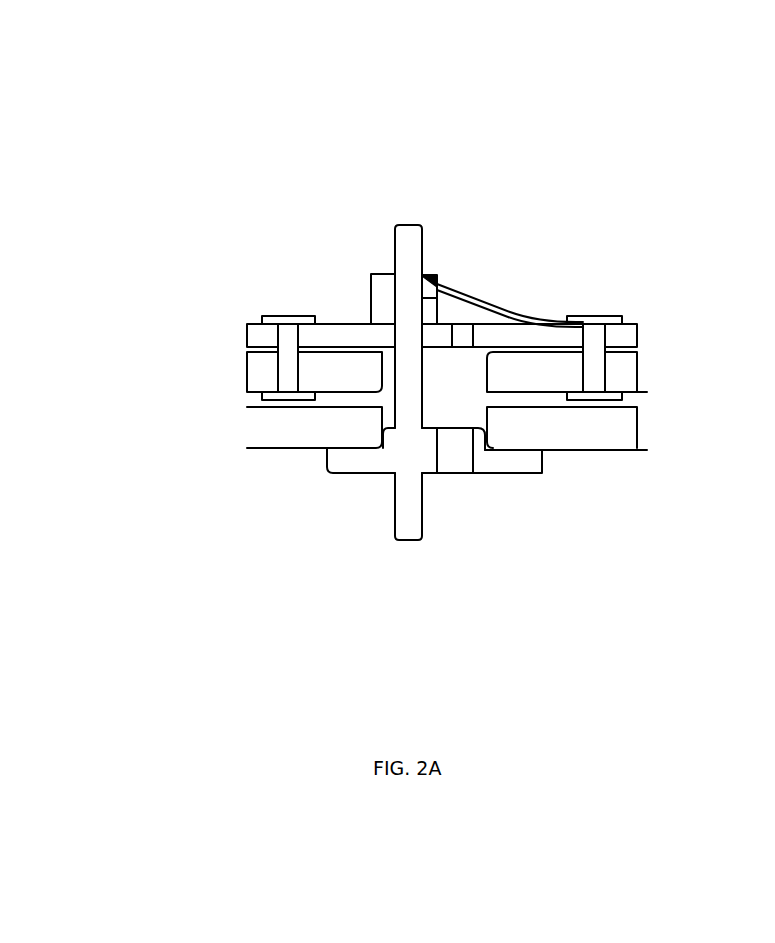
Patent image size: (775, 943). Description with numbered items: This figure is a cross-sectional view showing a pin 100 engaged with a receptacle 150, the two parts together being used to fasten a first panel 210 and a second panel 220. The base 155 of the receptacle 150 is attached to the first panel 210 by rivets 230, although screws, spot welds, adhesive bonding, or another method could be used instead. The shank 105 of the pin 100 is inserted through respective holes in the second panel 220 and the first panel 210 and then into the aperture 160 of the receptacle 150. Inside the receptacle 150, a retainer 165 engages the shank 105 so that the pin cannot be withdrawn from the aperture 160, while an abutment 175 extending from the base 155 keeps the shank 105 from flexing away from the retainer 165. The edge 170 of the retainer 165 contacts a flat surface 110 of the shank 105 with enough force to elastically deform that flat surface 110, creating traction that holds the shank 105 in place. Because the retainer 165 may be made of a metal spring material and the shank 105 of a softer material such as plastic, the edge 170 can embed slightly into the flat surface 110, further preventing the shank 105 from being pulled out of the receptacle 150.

The pin 100 is at (362, 543).
The shank 105 is at (411, 226).
The flat surface 110 is at (424, 246).
The receptacle 150 is at (605, 135).
The base 155 is at (640, 323).
The aperture 160 is at (391, 271).
The retainer 165 is at (482, 298).
The edge 170 is at (428, 273).
The abutment 175 is at (370, 290).
The first panel 210 is at (245, 394).
The second panel 220 is at (255, 449).
The rivets 230 is at (277, 316).